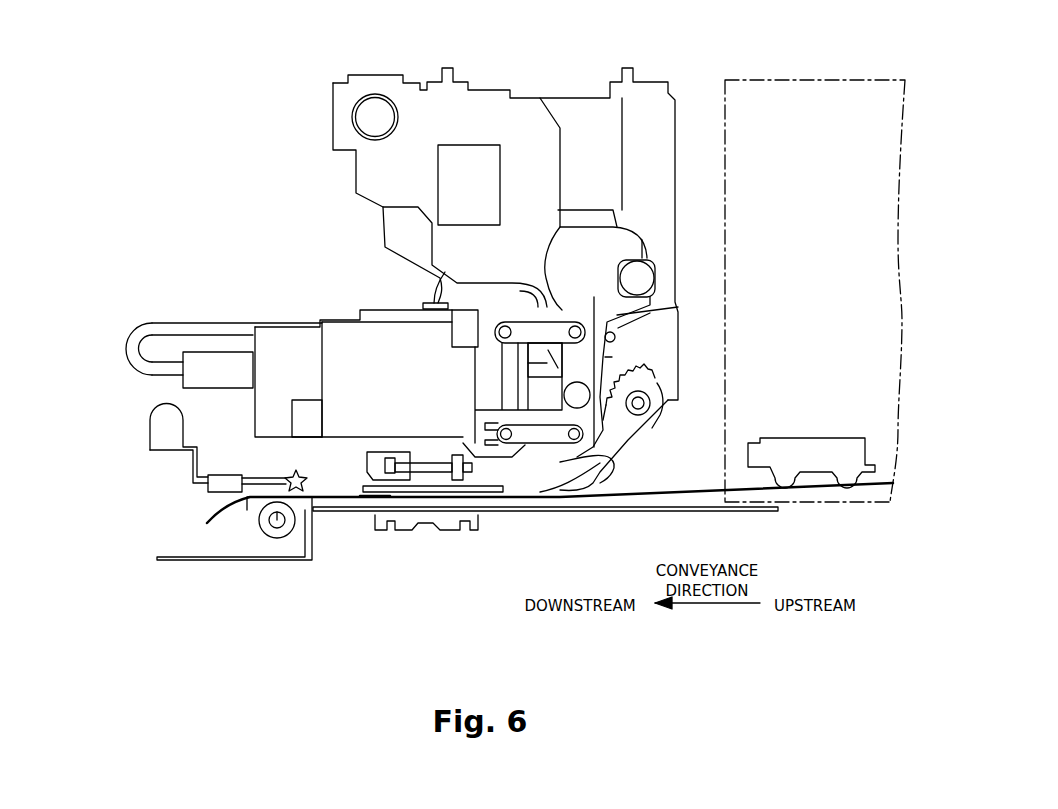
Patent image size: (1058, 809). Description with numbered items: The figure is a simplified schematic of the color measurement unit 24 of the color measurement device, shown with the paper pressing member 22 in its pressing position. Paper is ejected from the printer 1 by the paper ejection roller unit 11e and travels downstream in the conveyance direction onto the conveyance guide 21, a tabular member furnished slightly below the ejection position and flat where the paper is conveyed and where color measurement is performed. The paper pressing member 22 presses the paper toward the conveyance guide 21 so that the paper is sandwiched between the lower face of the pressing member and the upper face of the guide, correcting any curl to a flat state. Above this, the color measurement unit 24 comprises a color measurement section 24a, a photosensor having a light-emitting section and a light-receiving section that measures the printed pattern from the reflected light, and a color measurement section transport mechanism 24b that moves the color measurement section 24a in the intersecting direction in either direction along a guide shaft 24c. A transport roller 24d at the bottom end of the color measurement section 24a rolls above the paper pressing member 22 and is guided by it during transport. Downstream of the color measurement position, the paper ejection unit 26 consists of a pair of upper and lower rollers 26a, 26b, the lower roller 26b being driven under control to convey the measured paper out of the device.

The printer 1 is at (818, 80).
The paper ejection roller unit 11e is at (846, 428).
The conveyance guide 21 is at (440, 512).
The paper pressing member 22 is at (376, 494).
The color measurement unit 24 is at (310, 222).
The color measurement section 24a is at (348, 326).
The color measurement section transport mechanism 24b is at (690, 217).
The guide shaft 24c is at (654, 279).
The transport roller 24d is at (466, 472).
The paper ejection unit 26 is at (136, 432).
The upper roller 26a is at (289, 478).
The lower roller 26b is at (278, 530).